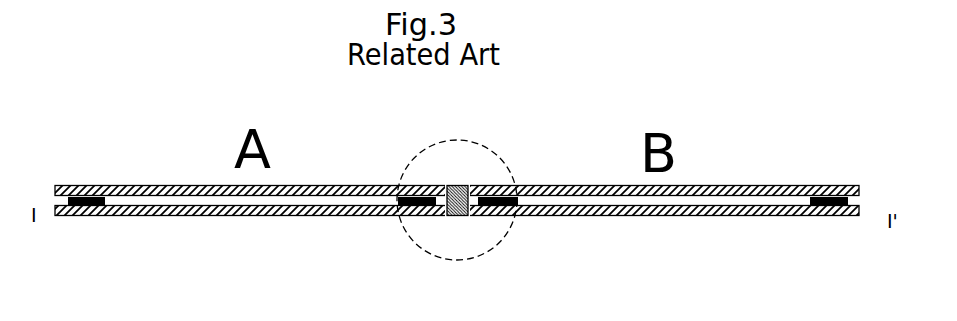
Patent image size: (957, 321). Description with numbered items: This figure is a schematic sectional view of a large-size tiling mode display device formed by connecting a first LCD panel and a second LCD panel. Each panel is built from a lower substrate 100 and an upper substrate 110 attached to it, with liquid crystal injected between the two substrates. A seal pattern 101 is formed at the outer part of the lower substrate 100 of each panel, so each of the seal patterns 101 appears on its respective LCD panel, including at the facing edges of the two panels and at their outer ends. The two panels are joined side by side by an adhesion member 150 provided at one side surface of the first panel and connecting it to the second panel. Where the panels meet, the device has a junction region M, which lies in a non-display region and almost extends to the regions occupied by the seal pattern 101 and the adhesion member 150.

The lower substrate 100 is at (851, 216).
The upper substrate 110 is at (838, 186).
The seal pattern 101 is at (78, 215).
The adhesion member 150 is at (458, 186).
The junction region M is at (505, 158).